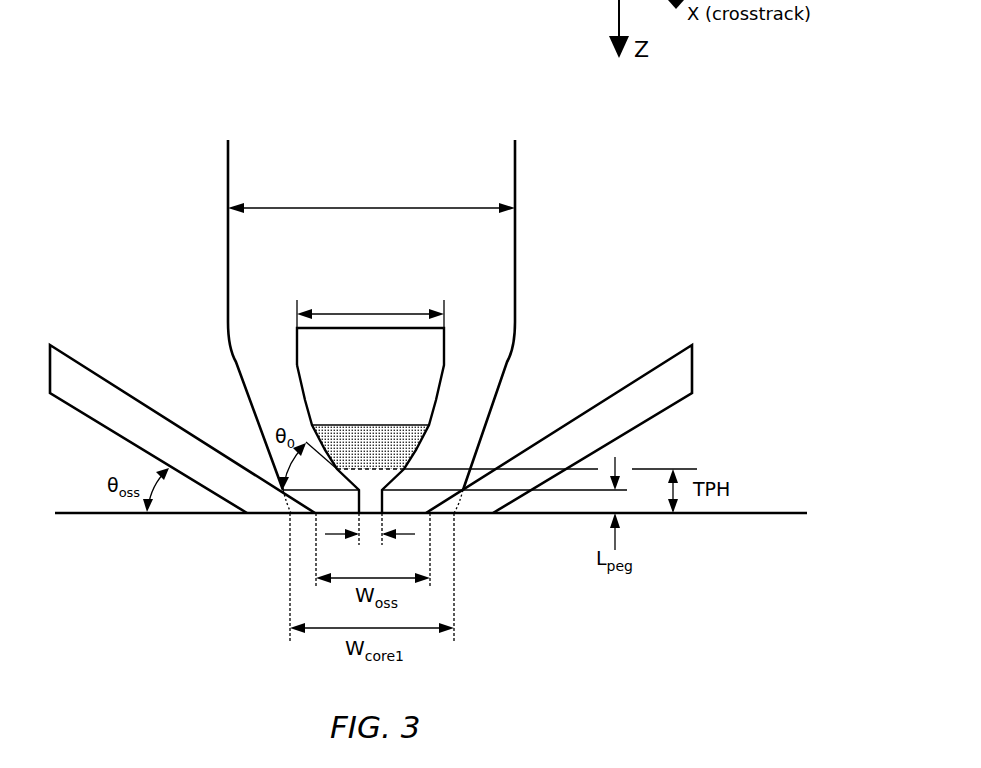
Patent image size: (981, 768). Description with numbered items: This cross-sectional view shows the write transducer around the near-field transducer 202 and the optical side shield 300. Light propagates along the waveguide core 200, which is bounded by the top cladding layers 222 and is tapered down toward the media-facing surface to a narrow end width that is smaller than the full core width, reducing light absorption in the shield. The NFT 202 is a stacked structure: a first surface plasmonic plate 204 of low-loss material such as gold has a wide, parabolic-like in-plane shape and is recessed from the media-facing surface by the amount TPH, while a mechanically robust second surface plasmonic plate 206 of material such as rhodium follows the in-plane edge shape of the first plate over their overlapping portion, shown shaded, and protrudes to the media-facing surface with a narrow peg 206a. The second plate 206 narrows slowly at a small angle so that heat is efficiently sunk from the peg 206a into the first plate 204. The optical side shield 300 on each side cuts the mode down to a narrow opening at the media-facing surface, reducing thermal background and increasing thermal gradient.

The waveguide core 200 is at (381, 158).
The near-field transducer 202 is at (410, 291).
The first surface plasmonic plate 204 is at (296, 350).
The second surface plasmonic plate 206 is at (413, 437).
The peg 206a is at (373, 500).
The top cladding layer 222 is at (157, 175).
The optical side shield 300 is at (118, 410).